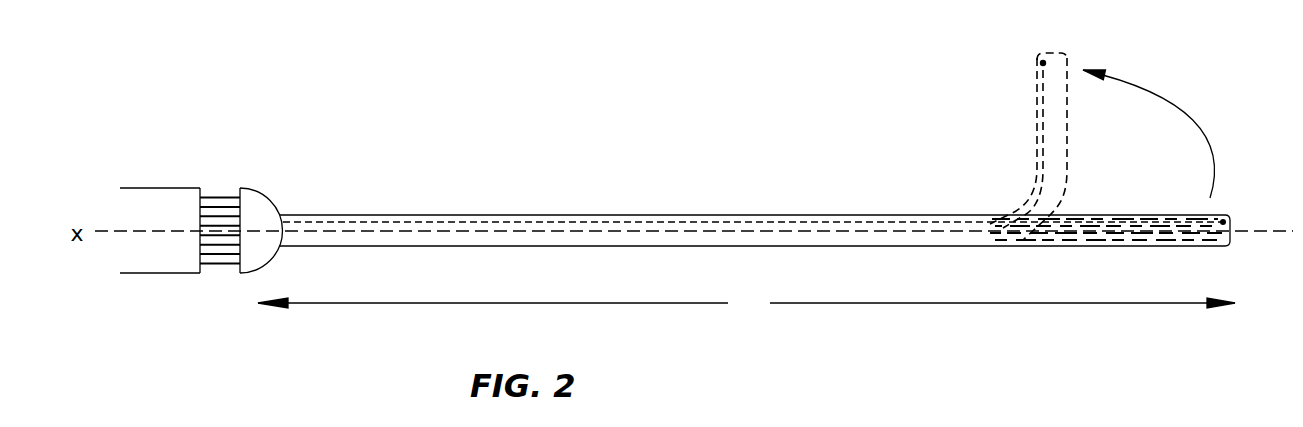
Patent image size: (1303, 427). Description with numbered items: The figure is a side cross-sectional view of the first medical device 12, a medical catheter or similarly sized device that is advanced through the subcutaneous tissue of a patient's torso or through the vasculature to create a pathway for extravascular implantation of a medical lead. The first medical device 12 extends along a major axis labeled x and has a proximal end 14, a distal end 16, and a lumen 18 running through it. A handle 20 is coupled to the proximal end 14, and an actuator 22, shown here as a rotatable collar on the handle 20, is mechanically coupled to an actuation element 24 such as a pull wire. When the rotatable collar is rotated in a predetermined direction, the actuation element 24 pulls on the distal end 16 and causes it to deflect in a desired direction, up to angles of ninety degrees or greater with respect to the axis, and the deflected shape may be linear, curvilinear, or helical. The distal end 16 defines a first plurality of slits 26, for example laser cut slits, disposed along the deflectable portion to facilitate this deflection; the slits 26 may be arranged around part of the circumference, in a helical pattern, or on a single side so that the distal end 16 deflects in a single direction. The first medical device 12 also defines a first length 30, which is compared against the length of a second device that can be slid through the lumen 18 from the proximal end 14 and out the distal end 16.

The first medical device 12 is at (713, 168).
The proximal end 14 is at (282, 218).
The distal end 16 is at (1068, 142).
The lumen 18 is at (1048, 48).
The handle 20 is at (138, 274).
The actuator 22 is at (220, 189).
The actuation element 24 is at (1040, 65).
The slits 26 is at (1120, 241).
The first length 30 is at (746, 304).